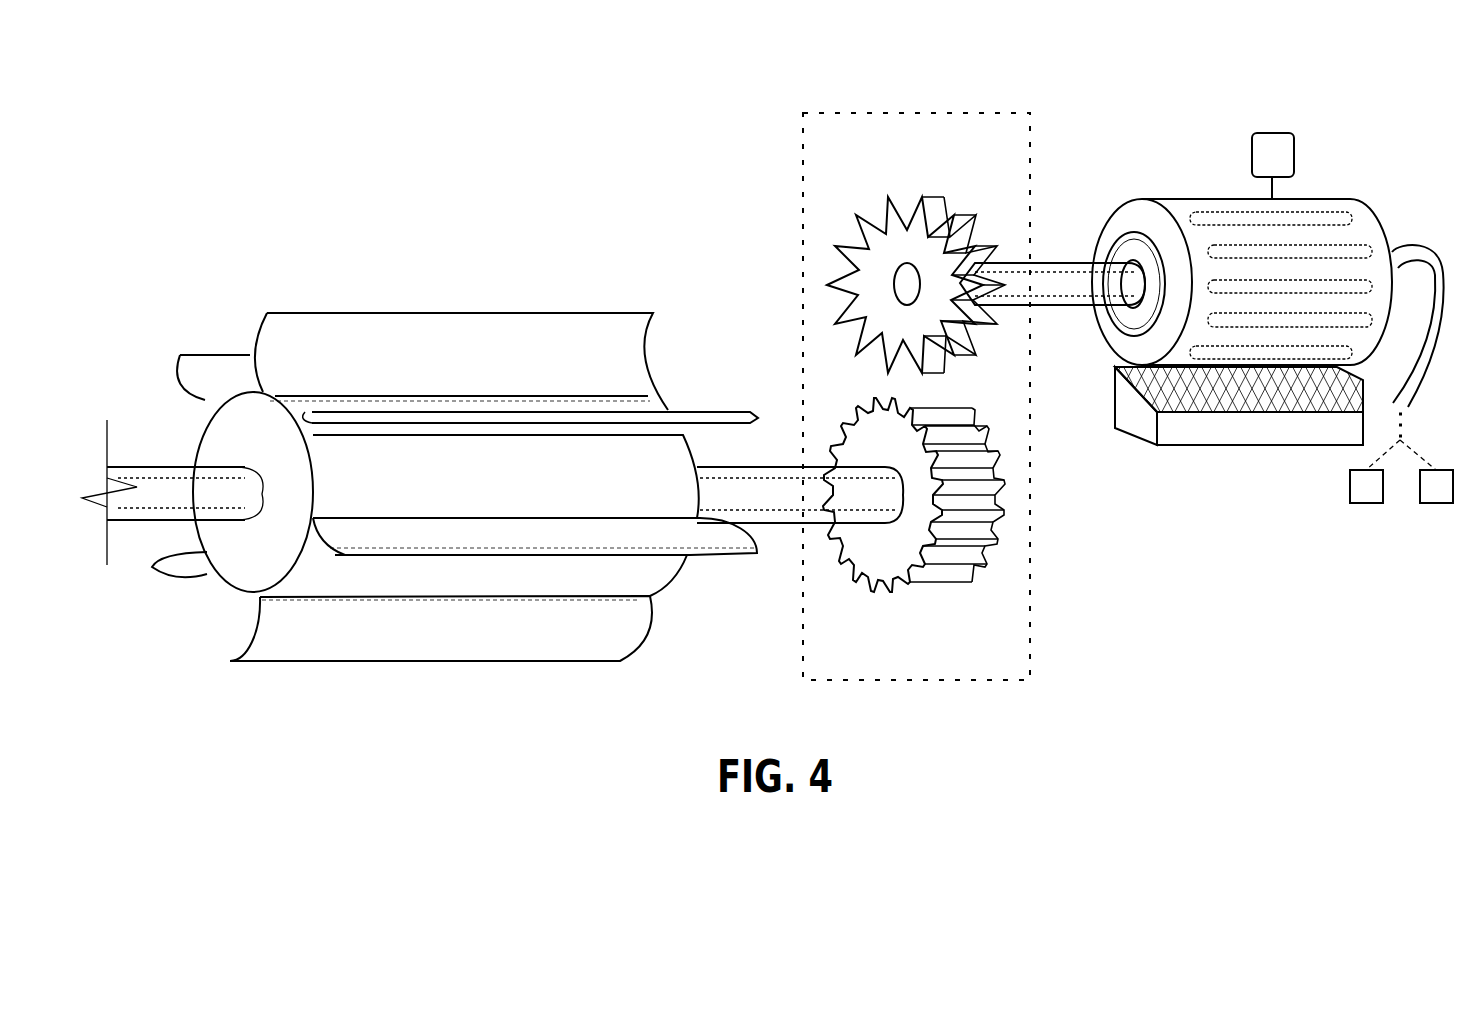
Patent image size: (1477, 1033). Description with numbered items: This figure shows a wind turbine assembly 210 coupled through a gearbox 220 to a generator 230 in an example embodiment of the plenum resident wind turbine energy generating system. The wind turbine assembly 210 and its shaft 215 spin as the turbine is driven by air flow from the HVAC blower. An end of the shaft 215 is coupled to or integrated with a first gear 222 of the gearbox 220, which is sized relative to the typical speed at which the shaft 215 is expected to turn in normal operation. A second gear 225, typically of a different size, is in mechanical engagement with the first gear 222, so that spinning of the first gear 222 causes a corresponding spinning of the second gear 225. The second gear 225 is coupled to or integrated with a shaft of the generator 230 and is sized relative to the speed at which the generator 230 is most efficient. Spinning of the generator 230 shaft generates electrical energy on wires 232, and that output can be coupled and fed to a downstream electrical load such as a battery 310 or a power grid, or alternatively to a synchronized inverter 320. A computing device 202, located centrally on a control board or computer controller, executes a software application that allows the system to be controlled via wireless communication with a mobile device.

The wind turbine assembly 210 is at (225, 252).
The shaft 215 is at (149, 480).
The gearbox 220 is at (1032, 622).
The first gear 222 is at (913, 598).
The second gear 225 is at (896, 210).
The generator 230 is at (1180, 222).
The wires 232 is at (1433, 276).
The computing device 202 is at (1295, 142).
The battery 310 is at (1360, 503).
The synchronized inverter 320 is at (1433, 504).